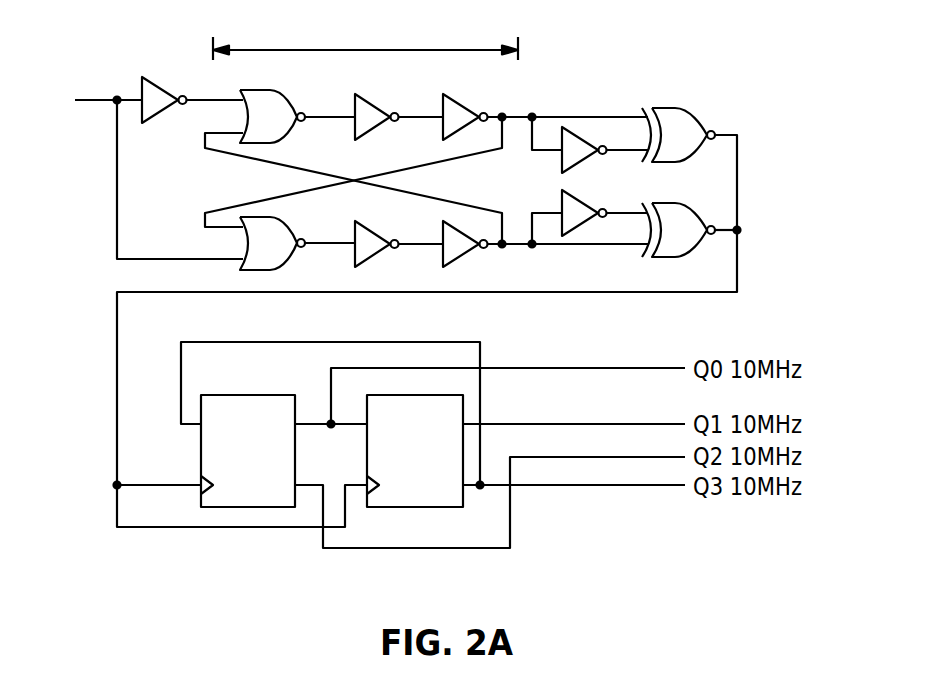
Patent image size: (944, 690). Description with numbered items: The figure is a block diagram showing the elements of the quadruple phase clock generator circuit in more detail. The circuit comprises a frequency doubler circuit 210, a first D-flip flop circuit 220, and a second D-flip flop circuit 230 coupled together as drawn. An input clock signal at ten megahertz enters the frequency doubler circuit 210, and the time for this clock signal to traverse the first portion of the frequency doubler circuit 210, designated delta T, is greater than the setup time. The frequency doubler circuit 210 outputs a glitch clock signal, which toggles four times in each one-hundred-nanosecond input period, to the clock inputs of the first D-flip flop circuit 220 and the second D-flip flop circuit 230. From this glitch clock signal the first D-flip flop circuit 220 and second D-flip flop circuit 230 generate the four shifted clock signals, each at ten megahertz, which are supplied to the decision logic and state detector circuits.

The frequency doubler circuit 210 is at (792, 83).
The first D-flip flop circuit 220 is at (246, 394).
The second D-flip flop circuit 230 is at (428, 509).